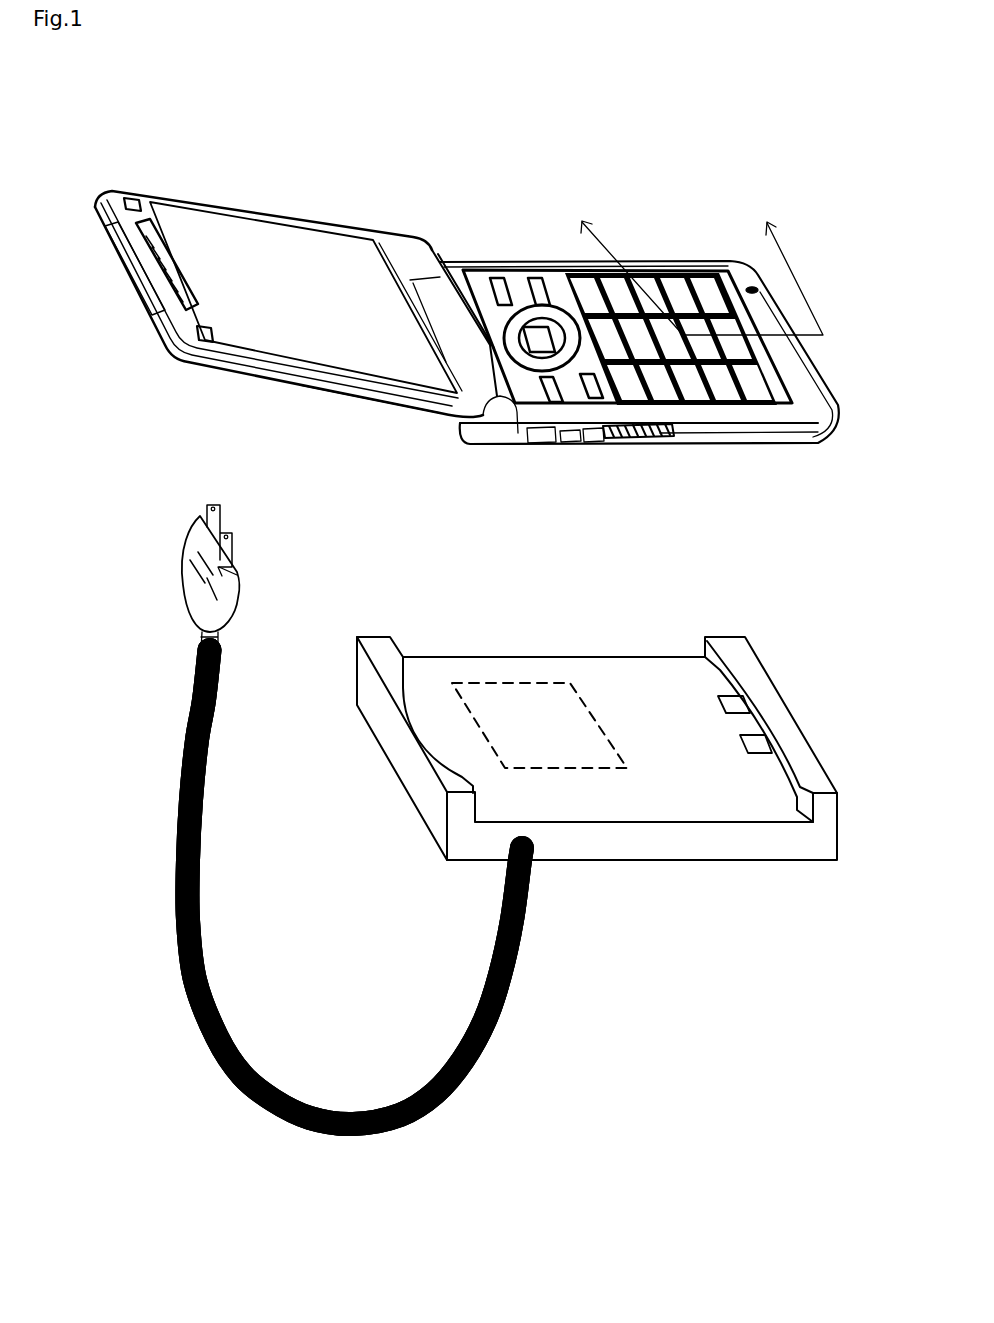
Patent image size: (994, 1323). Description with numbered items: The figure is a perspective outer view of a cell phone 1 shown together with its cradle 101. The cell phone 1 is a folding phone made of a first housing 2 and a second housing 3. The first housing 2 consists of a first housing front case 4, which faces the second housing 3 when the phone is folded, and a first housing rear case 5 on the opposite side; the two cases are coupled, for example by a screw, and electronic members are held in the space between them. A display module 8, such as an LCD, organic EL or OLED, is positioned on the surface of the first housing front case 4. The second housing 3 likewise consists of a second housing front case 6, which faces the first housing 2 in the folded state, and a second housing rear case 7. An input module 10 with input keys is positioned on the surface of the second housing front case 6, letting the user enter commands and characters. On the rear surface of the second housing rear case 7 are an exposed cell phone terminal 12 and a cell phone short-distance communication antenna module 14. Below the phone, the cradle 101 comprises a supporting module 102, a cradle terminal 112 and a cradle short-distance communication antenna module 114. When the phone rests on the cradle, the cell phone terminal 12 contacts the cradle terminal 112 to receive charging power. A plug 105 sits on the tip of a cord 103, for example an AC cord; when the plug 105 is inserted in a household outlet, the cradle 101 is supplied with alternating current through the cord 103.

The cell phone 1 is at (119, 183).
The first housing 2 is at (463, 492).
The second housing 3 is at (750, 510).
The first housing front case 4 is at (478, 384).
The first housing rear case 5 is at (360, 398).
The second housing front case 6 is at (735, 411).
The second housing rear case 7 is at (676, 448).
The display module 8 is at (257, 240).
The input module 10 is at (638, 288).
The cell phone terminal 12 is at (787, 458).
The cell phone short-distance communication antenna module 14 is at (560, 458).
The cradle 101 is at (357, 624).
The supporting module 102 is at (545, 679).
The cord 103 is at (477, 1071).
The plug 105 is at (190, 570).
The cradle terminal 112 is at (753, 745).
The cradle short-distance communication antenna module 114 is at (466, 685).